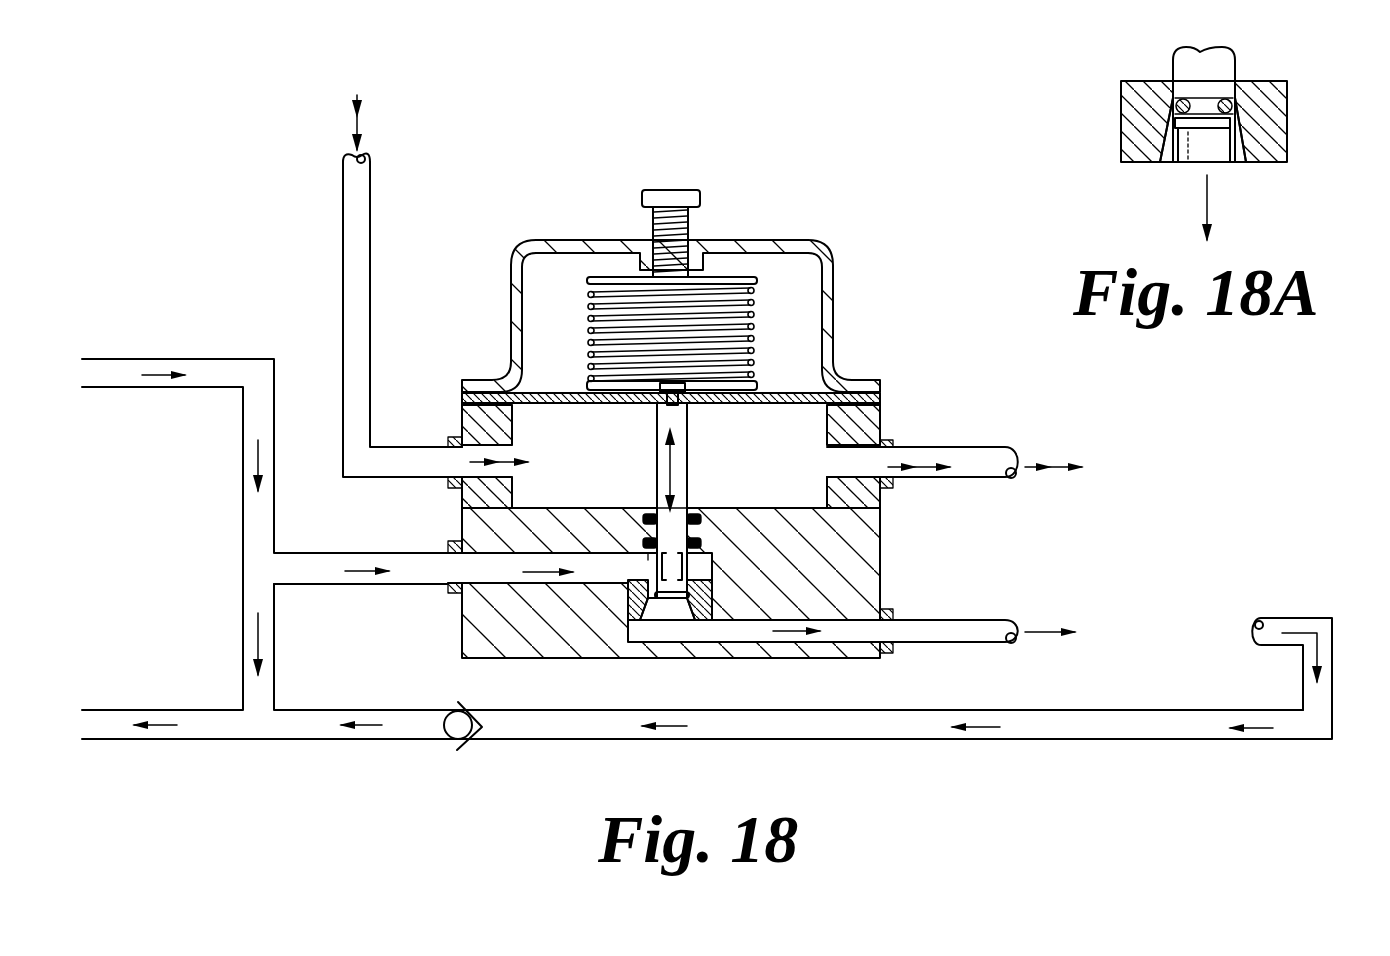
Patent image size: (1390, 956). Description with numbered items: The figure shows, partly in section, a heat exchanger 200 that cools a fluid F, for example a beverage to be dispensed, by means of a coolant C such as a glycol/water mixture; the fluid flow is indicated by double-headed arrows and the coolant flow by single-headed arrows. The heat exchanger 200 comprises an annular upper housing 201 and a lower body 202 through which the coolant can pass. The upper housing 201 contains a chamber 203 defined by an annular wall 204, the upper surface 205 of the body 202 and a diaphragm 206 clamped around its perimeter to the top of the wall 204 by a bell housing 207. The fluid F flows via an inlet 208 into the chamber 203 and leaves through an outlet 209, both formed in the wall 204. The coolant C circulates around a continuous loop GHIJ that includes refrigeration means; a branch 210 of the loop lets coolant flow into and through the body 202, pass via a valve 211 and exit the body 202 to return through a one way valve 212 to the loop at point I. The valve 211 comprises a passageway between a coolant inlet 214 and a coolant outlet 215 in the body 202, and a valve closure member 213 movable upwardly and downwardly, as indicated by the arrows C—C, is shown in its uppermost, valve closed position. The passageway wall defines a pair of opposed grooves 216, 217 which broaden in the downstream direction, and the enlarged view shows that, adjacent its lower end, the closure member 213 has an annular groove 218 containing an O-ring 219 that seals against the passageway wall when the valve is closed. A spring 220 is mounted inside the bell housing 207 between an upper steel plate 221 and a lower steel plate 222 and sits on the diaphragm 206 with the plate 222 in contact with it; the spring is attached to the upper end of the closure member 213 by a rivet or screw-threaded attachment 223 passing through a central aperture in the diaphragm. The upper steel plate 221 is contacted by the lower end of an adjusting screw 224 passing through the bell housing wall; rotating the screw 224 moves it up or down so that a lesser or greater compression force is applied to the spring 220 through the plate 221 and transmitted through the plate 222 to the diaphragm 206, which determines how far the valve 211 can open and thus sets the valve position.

In FIG. 18, the heat exchanger 200 is at (953, 533).
In FIG. 18, the upper housing 201 is at (449, 419).
In FIG. 18, the lower body 202 is at (845, 577).
In FIG. 18A, the lower body 202 is at (1287, 120).
In FIG. 18, the chamber 203 is at (560, 468).
In FIG. 18, the annular wall 204 is at (458, 500).
In FIG. 18, the upper surface 205 is at (780, 508).
In FIG. 18, the diaphragm 206 is at (547, 392).
In FIG. 18, the bell housing 207 is at (573, 243).
In FIG. 18, the inlet 208 is at (451, 461).
In FIG. 18, the outlet 209 is at (860, 463).
In FIG. 18, the branch 210 is at (276, 572).
In FIG. 18, the valve 211 is at (700, 567).
In FIG. 18, the one way valve 212 is at (447, 735).
In FIG. 18, the valve closure member 213 is at (693, 474).
In FIG. 18A, the valve closure member 213 is at (1170, 65).
In FIG. 18, the coolant inlet 214 is at (648, 560).
In FIG. 18, the coolant outlet 215 is at (673, 613).
In FIG. 18A, the groove 216 is at (1163, 157).
In FIG. 18A, the groove 217 is at (1243, 160).
In FIG. 18A, the annular groove 218 is at (1200, 107).
In FIG. 18A, the O-ring 219 is at (1233, 110).
In FIG. 18, the spring 220 is at (750, 327).
In FIG. 18, the upper steel plate 221 is at (757, 280).
In FIG. 18, the lower steel plate 222 is at (757, 388).
In FIG. 18, the rivet or screw-threaded attachment 223 is at (670, 383).
In FIG. 18, the adjusting screw 224 is at (673, 195).